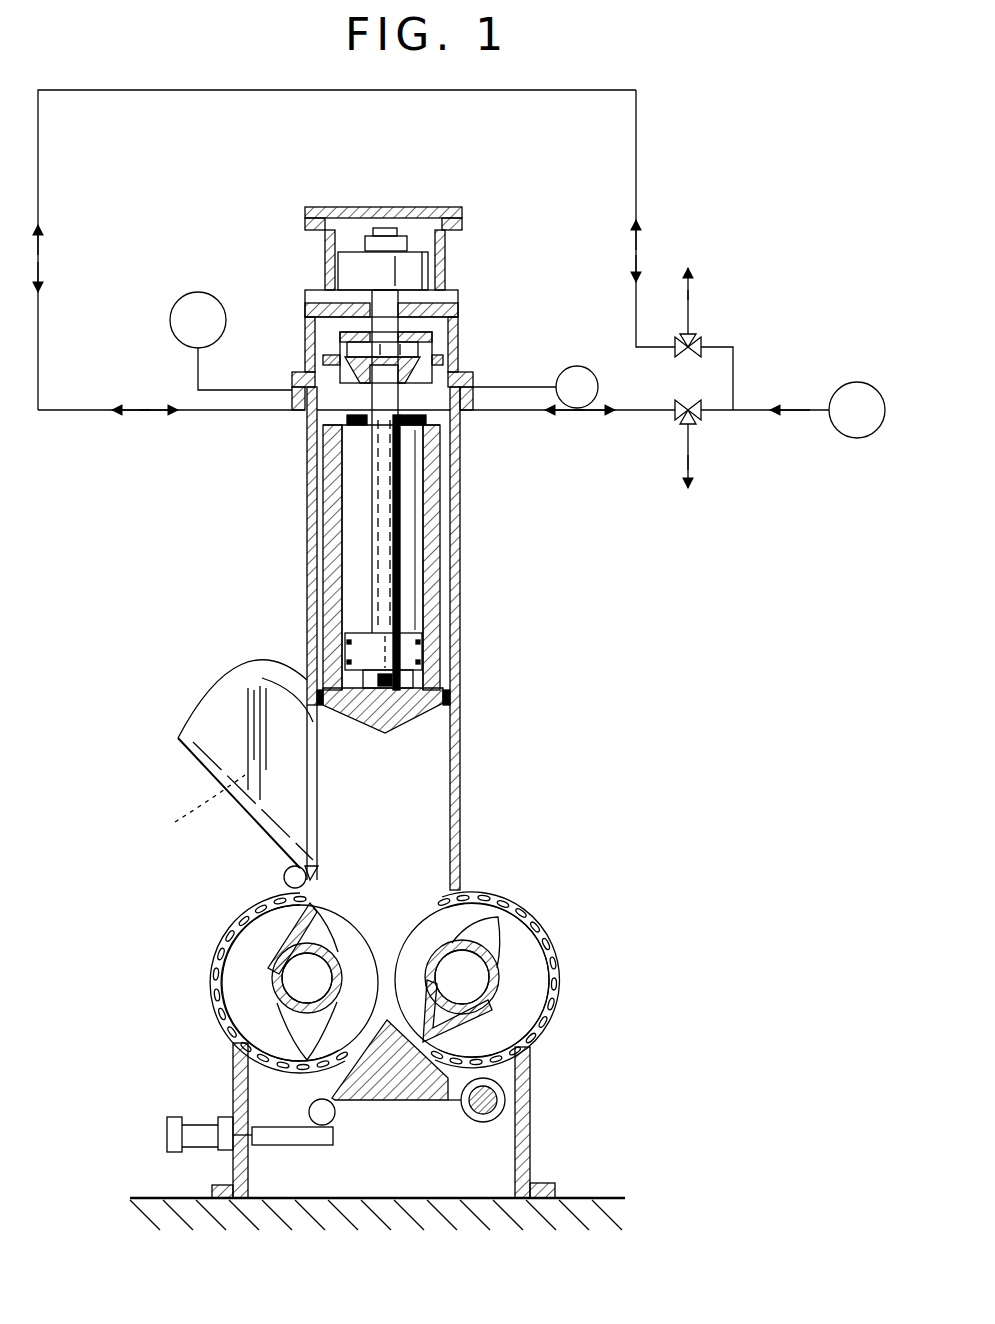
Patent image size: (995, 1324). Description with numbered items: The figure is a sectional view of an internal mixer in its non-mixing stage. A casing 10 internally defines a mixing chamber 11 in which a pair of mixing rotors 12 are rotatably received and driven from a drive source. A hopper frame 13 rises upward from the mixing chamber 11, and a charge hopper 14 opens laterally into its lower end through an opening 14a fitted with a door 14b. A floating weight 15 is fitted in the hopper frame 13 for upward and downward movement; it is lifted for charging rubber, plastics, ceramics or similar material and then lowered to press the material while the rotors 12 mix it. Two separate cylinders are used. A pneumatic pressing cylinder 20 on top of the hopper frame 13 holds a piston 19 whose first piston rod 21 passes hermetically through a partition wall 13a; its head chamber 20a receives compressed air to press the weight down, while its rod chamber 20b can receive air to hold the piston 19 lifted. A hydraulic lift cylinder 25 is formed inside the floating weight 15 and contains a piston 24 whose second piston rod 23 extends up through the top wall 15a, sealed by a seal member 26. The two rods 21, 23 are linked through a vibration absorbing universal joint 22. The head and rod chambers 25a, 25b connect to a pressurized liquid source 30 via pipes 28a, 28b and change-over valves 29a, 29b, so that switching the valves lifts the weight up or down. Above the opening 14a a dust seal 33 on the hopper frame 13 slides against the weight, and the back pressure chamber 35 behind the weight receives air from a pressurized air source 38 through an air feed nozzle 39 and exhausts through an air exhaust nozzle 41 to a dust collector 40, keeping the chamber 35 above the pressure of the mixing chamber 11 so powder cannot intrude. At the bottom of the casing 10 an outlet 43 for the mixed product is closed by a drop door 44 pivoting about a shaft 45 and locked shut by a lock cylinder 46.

The casing 10 is at (367, 961).
The mixing chamber 11 is at (520, 967).
The mixing rotors 12 is at (268, 978).
The hopper frame 13 is at (460, 760).
The partition wall 13a is at (328, 300).
The charge hopper 14 is at (223, 767).
The opening 14a is at (262, 694).
The door 14b is at (193, 804).
The floating weight 15 is at (424, 572).
The top wall 15a is at (440, 470).
The piston 19 is at (436, 270).
The pressing cylinder 20 is at (447, 201).
The head chamber 20a is at (352, 214).
The rod chamber 20b is at (446, 294).
The first piston rod 21 is at (453, 332).
The vibration absorbing universal joint 22 is at (340, 336).
The second piston rod 23 is at (372, 498).
The piston 24 is at (346, 648).
The lift cylinder 25 is at (336, 563).
The head chamber 25a is at (451, 683).
The rod chamber 25b is at (414, 516).
The seal member 26 is at (458, 427).
The pipe 28a is at (628, 418).
The pipe 28b is at (40, 368).
The change-over valve 29a is at (697, 427).
The change-over valve 29b is at (690, 335).
The pressurized liquid source 30 is at (857, 438).
The dust seal 33 is at (452, 697).
The back pressure chamber 35 is at (303, 425).
The pressurized air source 38 is at (577, 366).
The air feed nozzle 39 is at (453, 380).
The dust collector 40 is at (198, 293).
The air exhaust nozzle 41 is at (325, 360).
The outlet 43 is at (430, 1103).
The drop door 44 is at (378, 1077).
The shaft 45 is at (505, 1100).
The lock cylinder 46 is at (172, 1117).